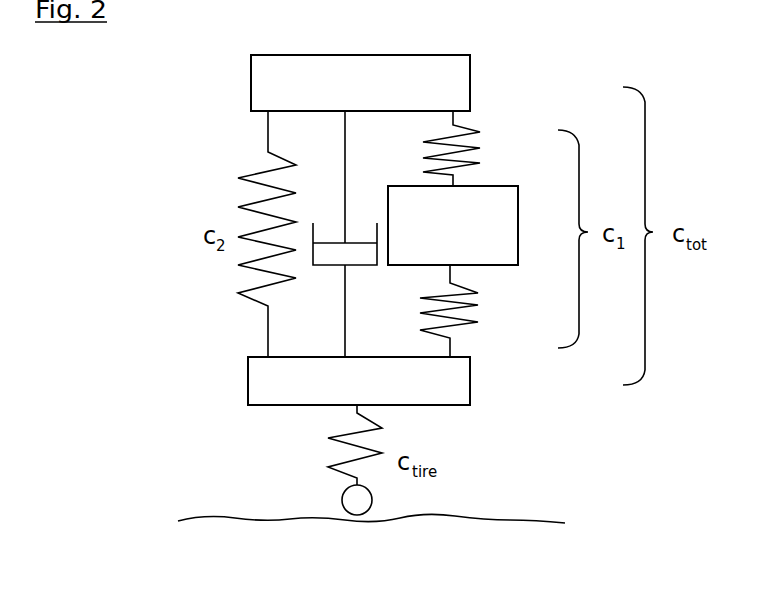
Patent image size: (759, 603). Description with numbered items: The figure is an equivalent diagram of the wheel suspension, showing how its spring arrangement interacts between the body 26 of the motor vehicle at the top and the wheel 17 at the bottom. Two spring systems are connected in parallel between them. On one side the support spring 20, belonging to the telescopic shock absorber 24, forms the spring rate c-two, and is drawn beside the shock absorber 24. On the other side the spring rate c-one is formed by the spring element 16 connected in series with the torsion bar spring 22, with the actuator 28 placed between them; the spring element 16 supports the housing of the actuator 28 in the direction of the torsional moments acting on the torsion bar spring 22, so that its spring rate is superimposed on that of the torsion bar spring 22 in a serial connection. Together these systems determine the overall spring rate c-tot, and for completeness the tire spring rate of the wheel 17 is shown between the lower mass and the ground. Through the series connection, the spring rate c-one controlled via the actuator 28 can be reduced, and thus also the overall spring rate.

The vehicle body 26 is at (373, 98).
The actuator 28 is at (469, 238).
The support spring 20 is at (243, 176).
The spring element 16 is at (430, 152).
The torsion bar spring 22 is at (428, 330).
The telescopic shock absorber 24 is at (322, 267).
The wheel 17 is at (372, 505).